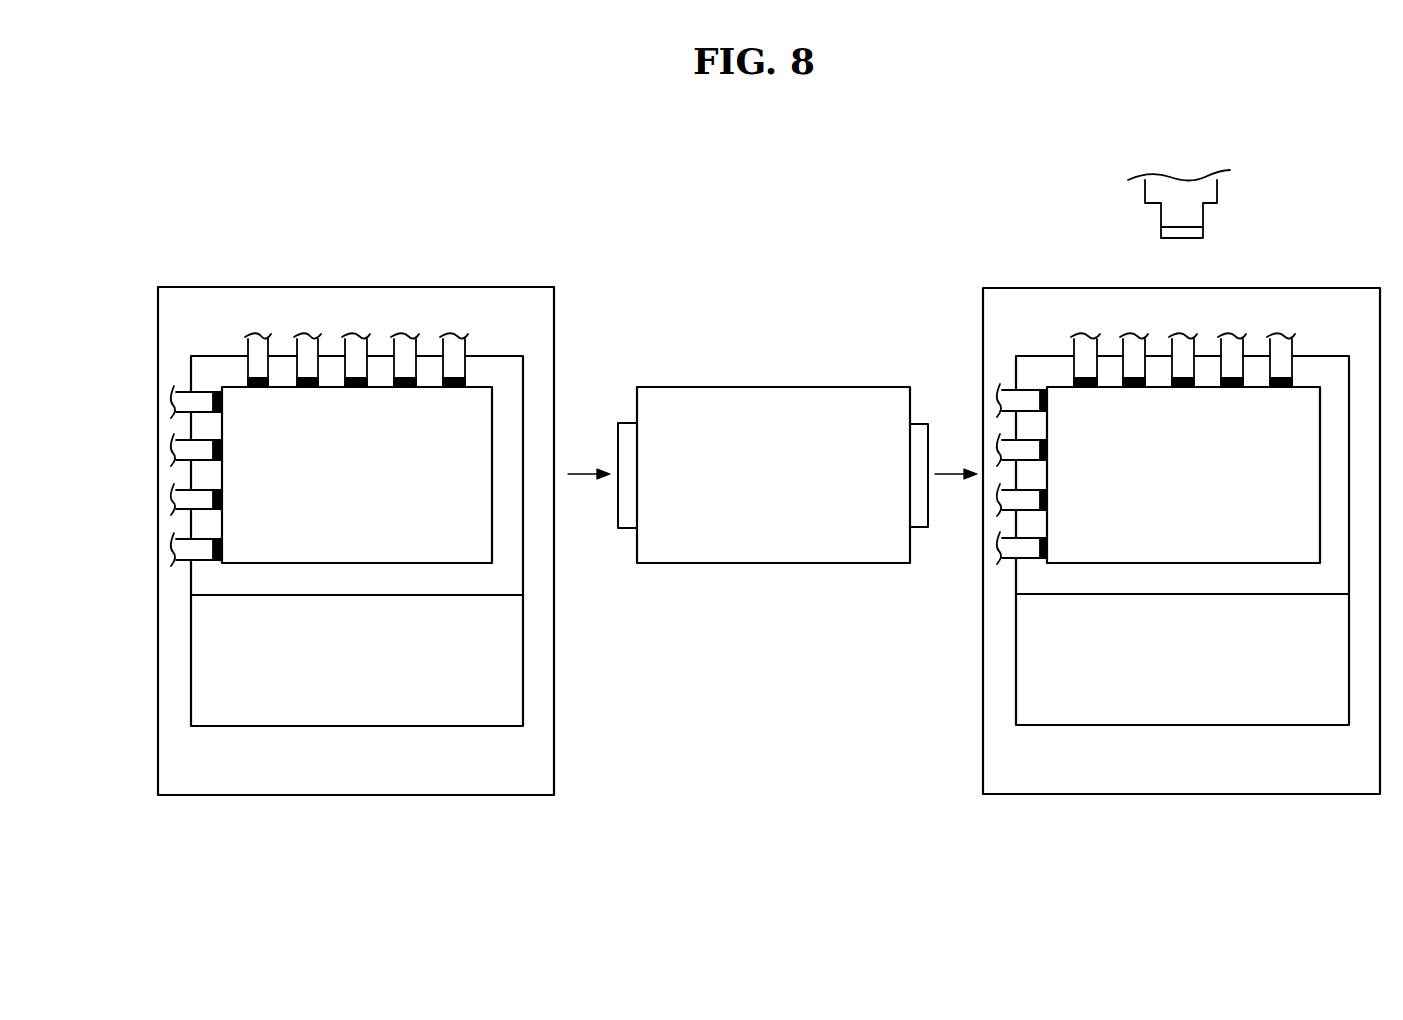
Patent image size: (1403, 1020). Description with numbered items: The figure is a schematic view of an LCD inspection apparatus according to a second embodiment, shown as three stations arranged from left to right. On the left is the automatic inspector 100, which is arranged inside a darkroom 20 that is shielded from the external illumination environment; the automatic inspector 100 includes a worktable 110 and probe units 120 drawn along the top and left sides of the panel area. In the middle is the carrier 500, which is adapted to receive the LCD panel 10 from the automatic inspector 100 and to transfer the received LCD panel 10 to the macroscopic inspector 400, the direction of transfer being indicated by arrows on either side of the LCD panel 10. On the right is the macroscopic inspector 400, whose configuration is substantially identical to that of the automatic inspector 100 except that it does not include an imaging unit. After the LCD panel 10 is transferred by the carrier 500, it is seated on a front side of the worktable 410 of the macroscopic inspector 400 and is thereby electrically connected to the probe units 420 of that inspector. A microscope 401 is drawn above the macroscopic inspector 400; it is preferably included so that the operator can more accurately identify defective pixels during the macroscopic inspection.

The automatic inspector 100 is at (324, 514).
The darkroom 20 is at (480, 297).
The worktable 110 is at (203, 580).
The probe units 120 is at (308, 350).
The LCD panel 10 is at (772, 479).
The carrier 500 is at (622, 420).
The macroscopic inspector 400 is at (1150, 482).
The worktable 410 is at (1042, 580).
The probe units 420 is at (1078, 350).
The microscope 401 is at (1200, 217).